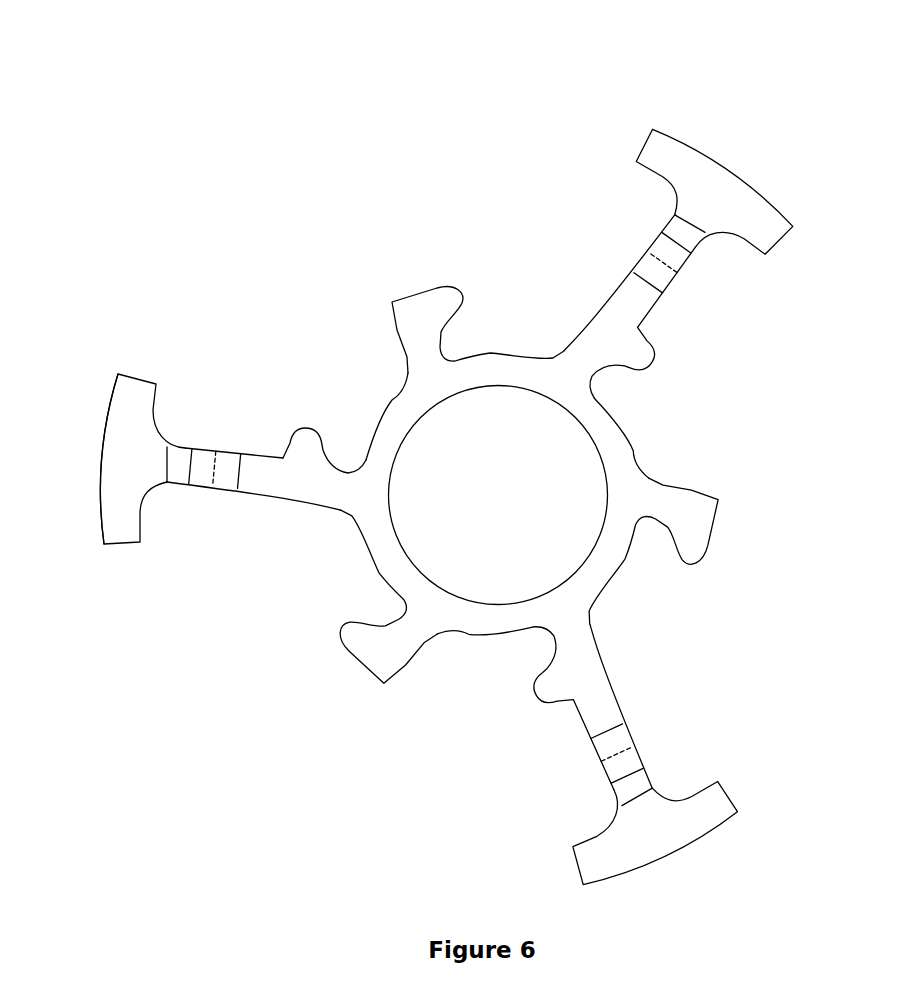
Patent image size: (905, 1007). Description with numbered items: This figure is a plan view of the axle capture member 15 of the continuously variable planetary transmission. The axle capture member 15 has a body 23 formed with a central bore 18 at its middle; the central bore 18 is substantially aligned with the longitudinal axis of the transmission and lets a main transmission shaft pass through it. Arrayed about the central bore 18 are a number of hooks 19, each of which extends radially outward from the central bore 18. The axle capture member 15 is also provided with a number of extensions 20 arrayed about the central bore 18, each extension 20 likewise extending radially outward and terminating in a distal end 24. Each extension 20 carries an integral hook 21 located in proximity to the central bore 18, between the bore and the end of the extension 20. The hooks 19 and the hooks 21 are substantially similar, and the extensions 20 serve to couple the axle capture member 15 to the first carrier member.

The axle capture member 15 is at (362, 78).
The central bore 18 is at (588, 556).
The hook 19 is at (462, 305).
The extension 20 is at (118, 375).
The hook 21 is at (318, 430).
The body 23 is at (632, 452).
The distal end 24 is at (103, 505).